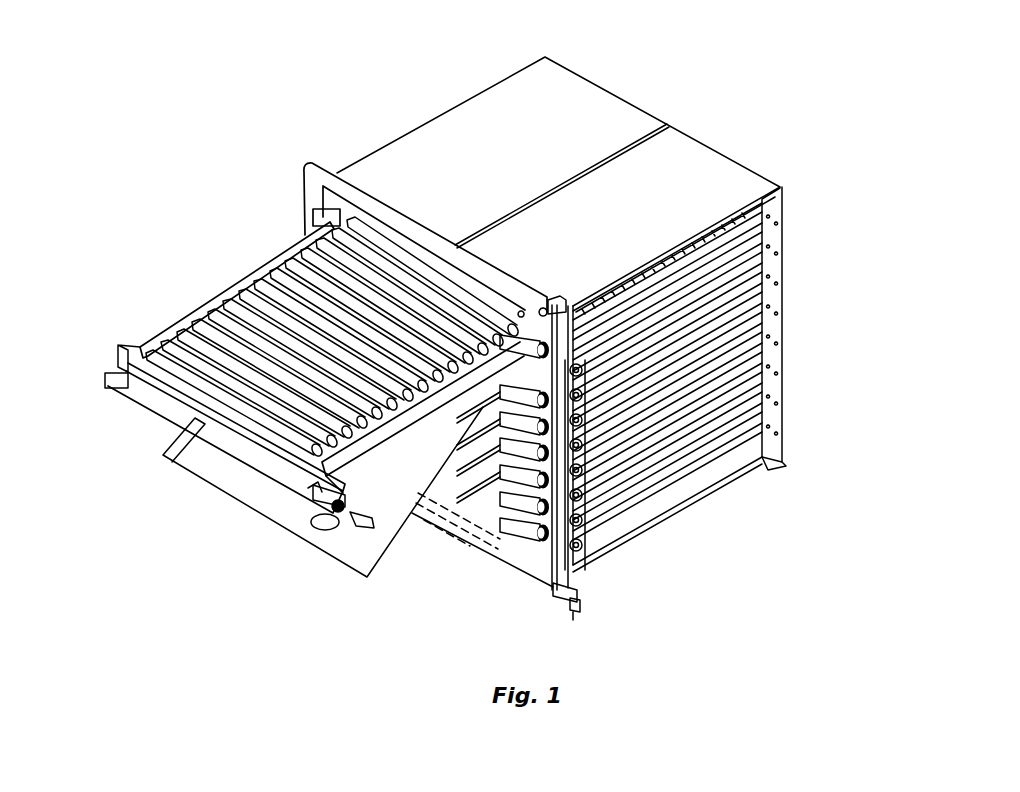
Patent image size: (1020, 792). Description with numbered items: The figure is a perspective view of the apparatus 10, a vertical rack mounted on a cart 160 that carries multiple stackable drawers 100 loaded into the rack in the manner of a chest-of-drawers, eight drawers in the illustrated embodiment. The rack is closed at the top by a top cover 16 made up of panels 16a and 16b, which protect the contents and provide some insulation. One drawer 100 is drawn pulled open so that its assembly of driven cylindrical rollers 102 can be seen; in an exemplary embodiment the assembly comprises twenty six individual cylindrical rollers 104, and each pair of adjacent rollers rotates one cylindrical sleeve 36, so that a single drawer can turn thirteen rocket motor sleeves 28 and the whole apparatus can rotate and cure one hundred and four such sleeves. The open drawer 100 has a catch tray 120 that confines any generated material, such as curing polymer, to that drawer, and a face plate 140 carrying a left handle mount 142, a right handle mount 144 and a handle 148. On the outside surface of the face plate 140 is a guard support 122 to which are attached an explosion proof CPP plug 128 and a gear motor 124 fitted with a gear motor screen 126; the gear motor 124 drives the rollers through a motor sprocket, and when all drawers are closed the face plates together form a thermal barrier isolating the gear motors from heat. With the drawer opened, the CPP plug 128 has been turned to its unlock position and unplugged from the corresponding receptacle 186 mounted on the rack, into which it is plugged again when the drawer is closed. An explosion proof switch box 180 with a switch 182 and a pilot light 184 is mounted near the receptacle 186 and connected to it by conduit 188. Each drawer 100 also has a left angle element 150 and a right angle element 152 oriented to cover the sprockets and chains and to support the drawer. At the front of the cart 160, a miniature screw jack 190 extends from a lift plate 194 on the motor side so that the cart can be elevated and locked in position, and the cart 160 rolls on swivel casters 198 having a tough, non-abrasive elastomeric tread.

The apparatus 10 is at (203, 91).
The top cover 16 is at (558, 165).
The panel 16a is at (488, 134).
The panel 16b is at (661, 193).
The rocket motor sleeve 28 is at (326, 403).
The cylindrical sleeve 36 is at (223, 325).
The stackable drawer 100 is at (279, 421).
The assembly of driven cylindrical rollers 102 is at (468, 438).
The individual cylindrical roller 104 is at (468, 466).
The catch tray 120 is at (208, 475).
The guard support 122 is at (265, 553).
The gear motor 124 is at (307, 503).
The gear motor screen 126 is at (347, 510).
The explosion proof CPP plug 128 is at (353, 527).
The face plate 140 is at (118, 348).
The left handle mount 142 is at (108, 379).
The right handle mount 144 is at (315, 492).
The handle 148 is at (190, 415).
The left angle element 150 is at (290, 257).
The right angle element 152 is at (387, 448).
The cart 160 is at (572, 307).
The explosion proof switch box 180 is at (550, 300).
The switch 182 is at (547, 313).
The pilot light 184 is at (523, 310).
The receptacle 186 is at (567, 378).
The conduit 188 is at (578, 302).
The miniature screw jack 190 is at (577, 603).
The lift plate 194 is at (560, 590).
The swivel caster 198 is at (770, 462).